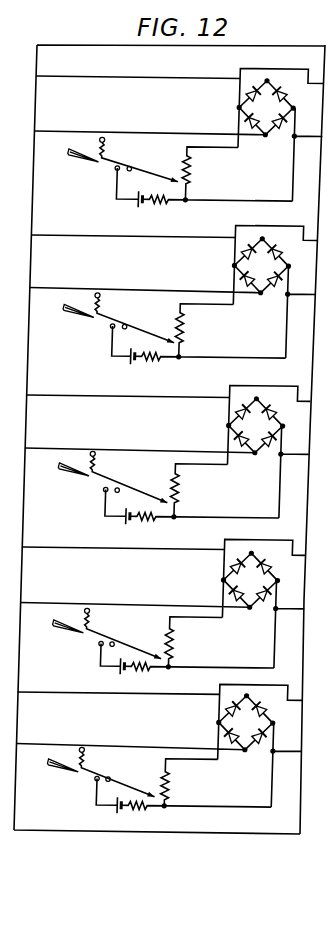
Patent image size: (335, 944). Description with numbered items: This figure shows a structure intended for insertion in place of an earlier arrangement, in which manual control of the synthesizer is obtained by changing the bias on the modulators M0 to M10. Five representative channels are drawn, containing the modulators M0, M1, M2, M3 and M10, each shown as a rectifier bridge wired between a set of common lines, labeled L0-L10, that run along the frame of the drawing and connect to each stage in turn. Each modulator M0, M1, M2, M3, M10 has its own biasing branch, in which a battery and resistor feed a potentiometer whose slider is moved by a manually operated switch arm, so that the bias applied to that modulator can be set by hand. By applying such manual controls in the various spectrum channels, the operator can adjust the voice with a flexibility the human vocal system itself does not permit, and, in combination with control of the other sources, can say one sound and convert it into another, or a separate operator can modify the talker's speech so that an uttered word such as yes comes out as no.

The modulator M0 is at (178, 137).
The modulator M1 is at (172, 294).
The modulator M2 is at (167, 454).
The modulator M3 is at (162, 606).
The modulator M10 is at (158, 748).
The supply lines L0 to L10 L0-L10 is at (170, 439).